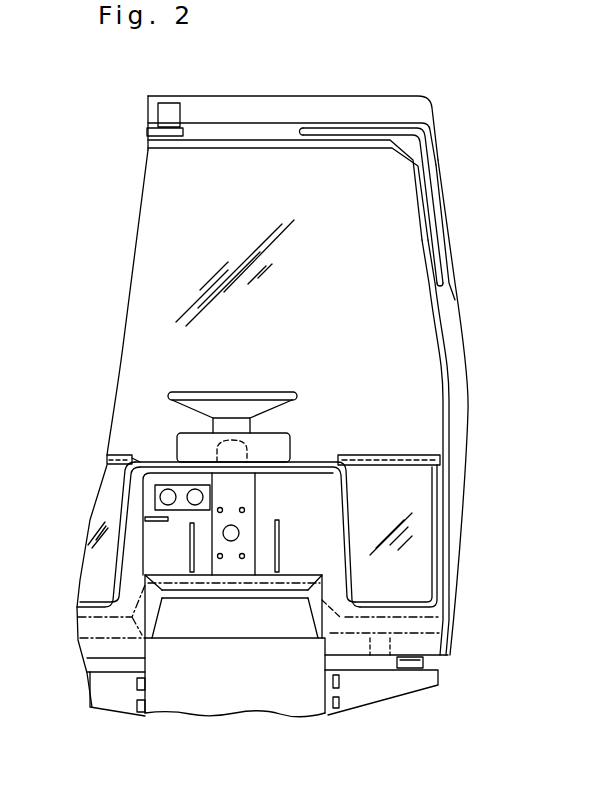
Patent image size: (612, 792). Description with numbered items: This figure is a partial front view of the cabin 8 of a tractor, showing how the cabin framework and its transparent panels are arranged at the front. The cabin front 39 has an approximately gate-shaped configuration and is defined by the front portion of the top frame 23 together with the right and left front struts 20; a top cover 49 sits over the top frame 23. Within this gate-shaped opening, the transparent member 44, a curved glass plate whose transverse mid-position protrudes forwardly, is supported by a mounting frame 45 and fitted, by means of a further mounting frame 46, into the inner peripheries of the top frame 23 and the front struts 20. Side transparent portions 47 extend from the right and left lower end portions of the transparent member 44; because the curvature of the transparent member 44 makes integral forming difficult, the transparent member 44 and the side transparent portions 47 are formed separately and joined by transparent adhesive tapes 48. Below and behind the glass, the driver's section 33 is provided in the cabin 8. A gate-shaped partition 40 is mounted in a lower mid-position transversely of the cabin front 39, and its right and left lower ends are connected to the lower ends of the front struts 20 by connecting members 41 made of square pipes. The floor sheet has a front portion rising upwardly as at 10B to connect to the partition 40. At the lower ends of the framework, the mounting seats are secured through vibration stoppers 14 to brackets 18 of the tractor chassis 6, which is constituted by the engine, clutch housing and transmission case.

The cabin 8 is at (452, 153).
The top cover 49 is at (292, 105).
The top frame 23 is at (253, 137).
The mounting frame 46 is at (433, 292).
The cabin front 39 is at (414, 353).
The front struts 20 is at (457, 406).
The transparent member 44 is at (243, 329).
The driver's section 33 is at (297, 390).
The partition 40 is at (285, 480).
The mounting frame 45 is at (147, 453).
The transparent adhesive tapes 48 is at (120, 466).
The side transparent portions 47 is at (425, 547).
The connecting members 41 is at (420, 645).
The rising front portion of floor sheet 10B is at (227, 612).
The tractor chassis 6 is at (237, 707).
The brackets 18 is at (118, 700).
The vibration stoppers 14 is at (417, 667).